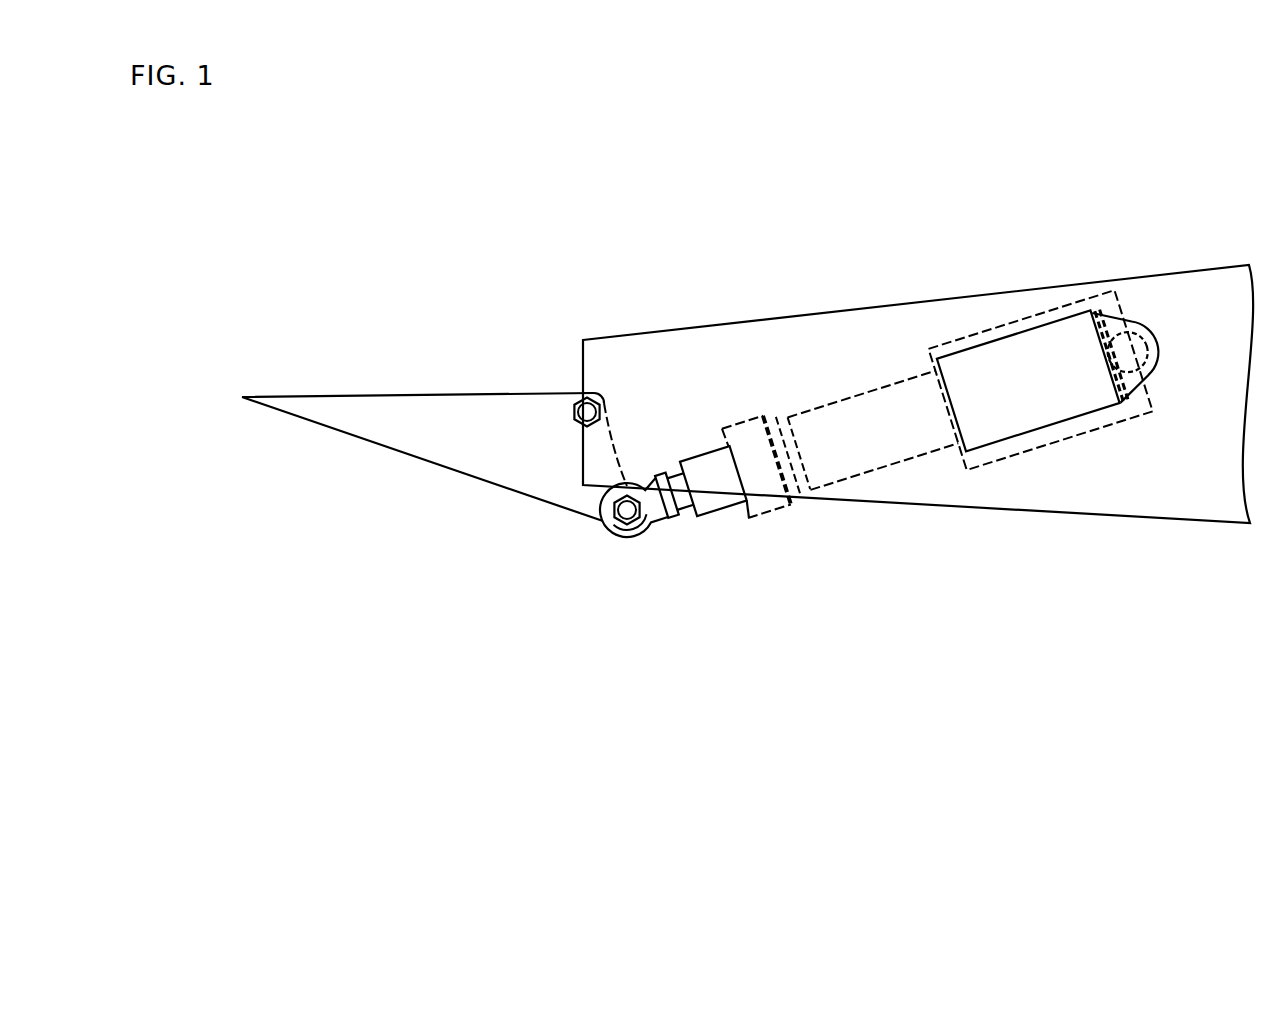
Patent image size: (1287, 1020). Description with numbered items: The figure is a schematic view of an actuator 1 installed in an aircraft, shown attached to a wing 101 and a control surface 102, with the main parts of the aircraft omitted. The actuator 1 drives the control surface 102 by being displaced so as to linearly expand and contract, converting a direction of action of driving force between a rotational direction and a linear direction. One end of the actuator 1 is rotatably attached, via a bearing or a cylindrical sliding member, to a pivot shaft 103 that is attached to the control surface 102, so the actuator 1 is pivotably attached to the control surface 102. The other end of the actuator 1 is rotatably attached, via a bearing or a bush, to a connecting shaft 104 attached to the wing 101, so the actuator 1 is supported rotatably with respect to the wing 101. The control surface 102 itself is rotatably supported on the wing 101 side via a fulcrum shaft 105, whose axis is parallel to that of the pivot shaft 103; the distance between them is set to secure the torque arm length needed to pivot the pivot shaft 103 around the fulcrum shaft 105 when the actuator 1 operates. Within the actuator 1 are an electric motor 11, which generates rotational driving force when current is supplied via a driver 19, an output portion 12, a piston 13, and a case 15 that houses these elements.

The actuator 1 is at (891, 465).
The electric motor 11 is at (946, 420).
The output portion 12 is at (628, 540).
The piston 13 is at (714, 510).
The case 15 is at (868, 478).
The driver 19 is at (1077, 307).
The wing 101 is at (1197, 282).
The control surface 102 is at (388, 436).
The pivot shaft 103 is at (616, 516).
The connecting shaft 104 is at (1158, 368).
The fulcrum shaft 105 is at (578, 402).